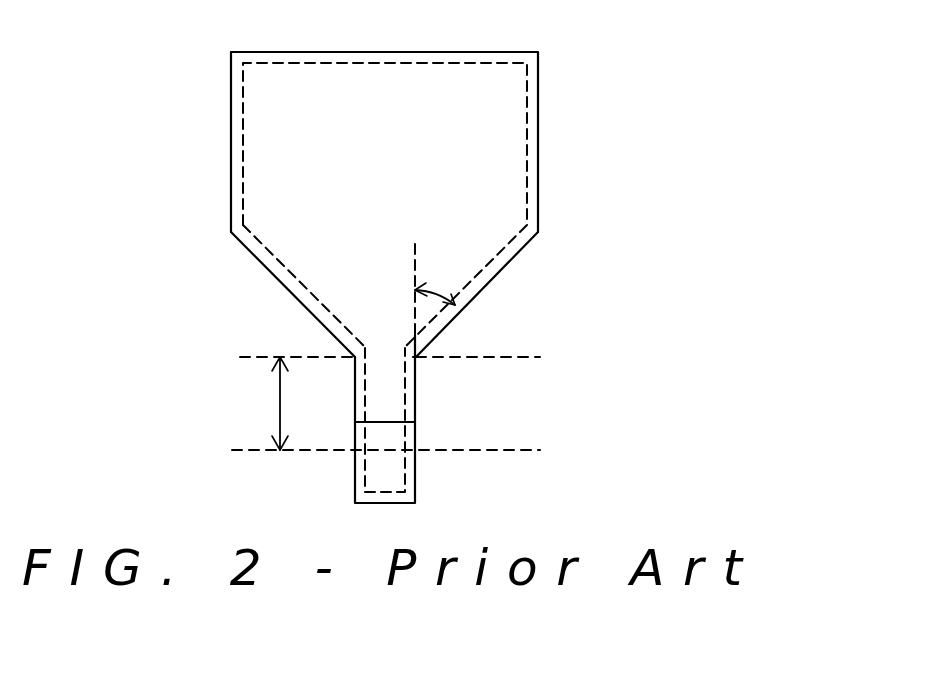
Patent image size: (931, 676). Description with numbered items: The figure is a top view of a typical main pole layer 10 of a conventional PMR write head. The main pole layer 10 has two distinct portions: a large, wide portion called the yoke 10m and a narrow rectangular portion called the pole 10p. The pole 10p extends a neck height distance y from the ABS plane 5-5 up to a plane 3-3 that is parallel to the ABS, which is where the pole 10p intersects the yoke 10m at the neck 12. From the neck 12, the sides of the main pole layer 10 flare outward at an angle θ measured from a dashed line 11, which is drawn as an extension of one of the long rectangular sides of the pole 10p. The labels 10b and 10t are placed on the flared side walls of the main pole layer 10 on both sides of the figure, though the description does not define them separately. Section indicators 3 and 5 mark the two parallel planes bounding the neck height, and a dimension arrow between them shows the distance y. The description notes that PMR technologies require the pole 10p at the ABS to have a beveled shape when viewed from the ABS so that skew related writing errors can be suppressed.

The main pole layer 10 is at (589, 46).
The yoke 10m is at (494, 129).
The bottom wall 10b is at (270, 257).
The tapered wall 10t is at (285, 287).
The pole 10p is at (382, 399).
The dashed line 11 is at (417, 277).
The neck 12 is at (420, 356).
The plane 3- 3 is at (385, 359).
The ABS plane 5- 5 is at (385, 450).